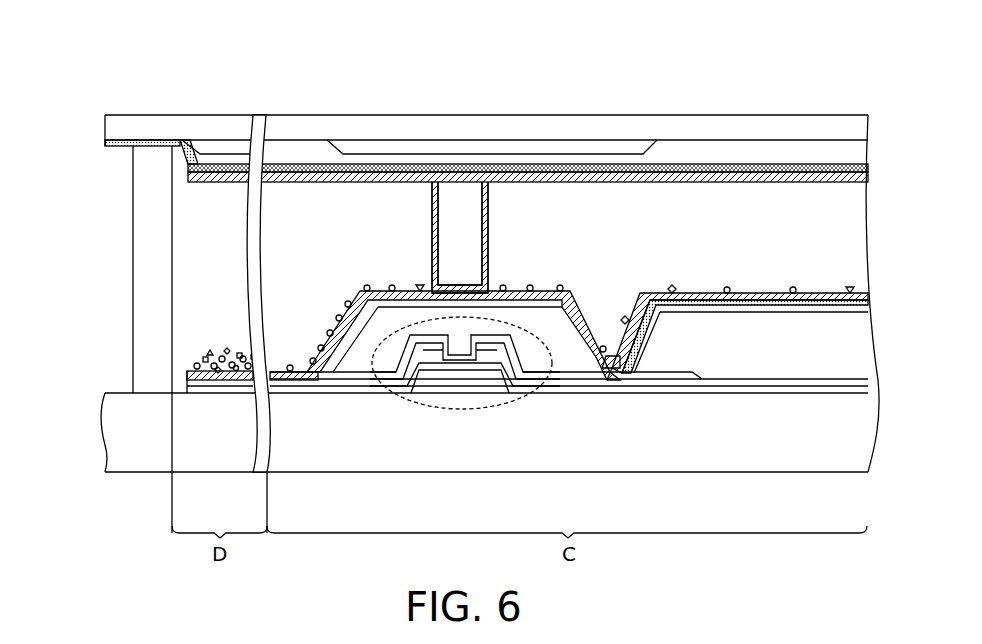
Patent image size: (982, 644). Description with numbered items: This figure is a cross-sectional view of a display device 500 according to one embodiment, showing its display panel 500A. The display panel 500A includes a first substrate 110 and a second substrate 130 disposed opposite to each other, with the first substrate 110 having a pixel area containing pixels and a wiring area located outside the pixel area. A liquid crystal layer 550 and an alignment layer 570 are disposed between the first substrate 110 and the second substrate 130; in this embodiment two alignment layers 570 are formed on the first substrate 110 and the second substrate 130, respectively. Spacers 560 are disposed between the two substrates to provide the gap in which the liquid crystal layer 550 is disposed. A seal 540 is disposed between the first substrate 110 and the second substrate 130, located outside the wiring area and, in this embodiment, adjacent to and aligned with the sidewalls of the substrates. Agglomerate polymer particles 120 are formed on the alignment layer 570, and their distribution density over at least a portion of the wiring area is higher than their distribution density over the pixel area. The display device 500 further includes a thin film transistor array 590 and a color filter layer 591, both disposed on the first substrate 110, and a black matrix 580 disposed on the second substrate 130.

The display device 500 is at (90, 90).
The display panel 500A is at (825, 58).
The first substrate 110 is at (597, 447).
The agglomerate polymer particles 120 is at (183, 367).
The second substrate 130 is at (117, 129).
The seal 540 is at (150, 262).
The liquid crystal layer 550 is at (310, 215).
The spacers 560 is at (462, 195).
The alignment layer 570 is at (188, 175).
The black matrix 580 is at (223, 148).
The thin film transistor array 590 is at (450, 410).
The color filter layer 591 is at (350, 347).